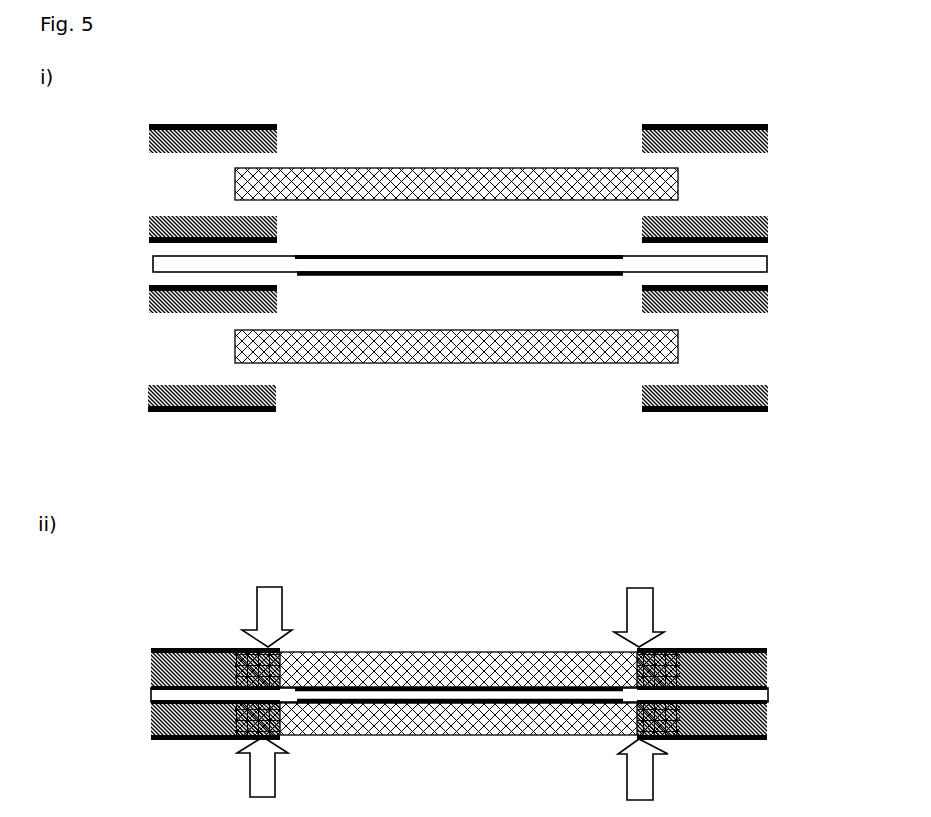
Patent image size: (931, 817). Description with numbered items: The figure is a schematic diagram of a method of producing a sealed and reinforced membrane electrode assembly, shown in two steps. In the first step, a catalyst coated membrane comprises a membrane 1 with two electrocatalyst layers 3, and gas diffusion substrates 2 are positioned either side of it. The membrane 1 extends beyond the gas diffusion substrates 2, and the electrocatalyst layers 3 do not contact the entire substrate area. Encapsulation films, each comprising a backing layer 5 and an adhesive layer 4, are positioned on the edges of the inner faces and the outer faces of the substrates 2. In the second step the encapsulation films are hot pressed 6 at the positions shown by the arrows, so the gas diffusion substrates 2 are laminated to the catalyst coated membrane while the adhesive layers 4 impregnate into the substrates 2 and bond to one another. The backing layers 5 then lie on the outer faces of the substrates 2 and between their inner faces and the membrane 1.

The membrane 1 is at (360, 267).
The gas diffusion substrates 2 is at (488, 177).
The electrocatalyst layers 3 is at (600, 259).
The adhesive layers 4 is at (210, 143).
The backing layers 5 is at (145, 132).
The hot pressing 6 is at (458, 693).